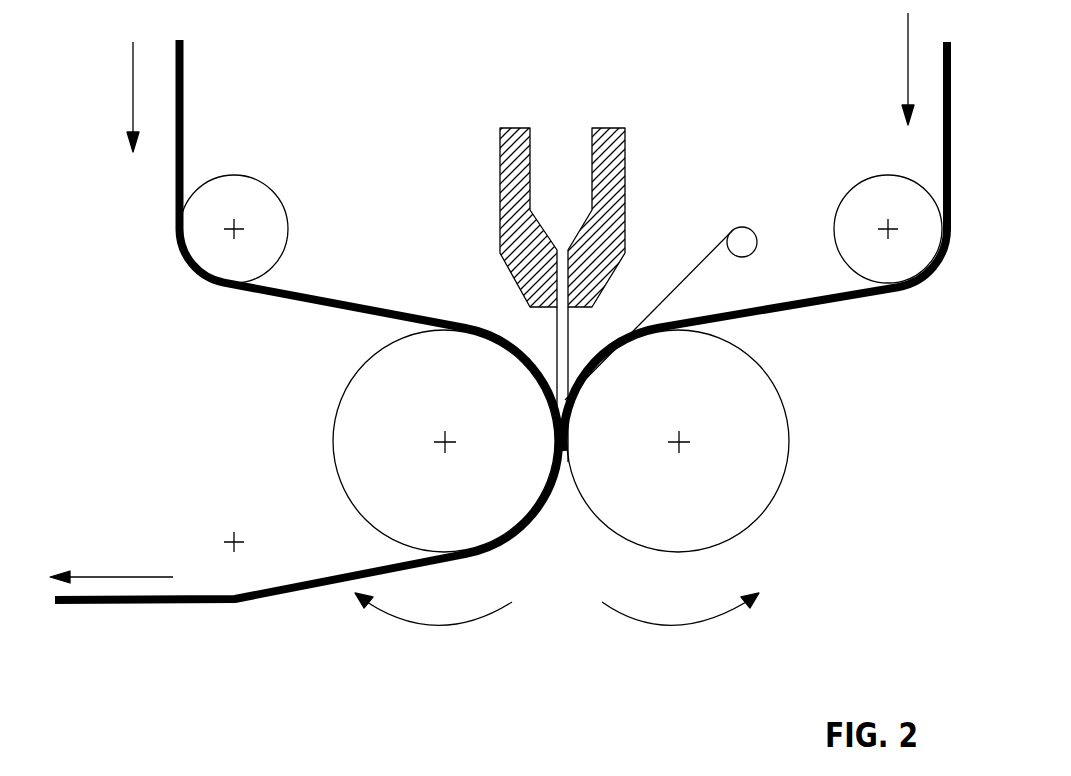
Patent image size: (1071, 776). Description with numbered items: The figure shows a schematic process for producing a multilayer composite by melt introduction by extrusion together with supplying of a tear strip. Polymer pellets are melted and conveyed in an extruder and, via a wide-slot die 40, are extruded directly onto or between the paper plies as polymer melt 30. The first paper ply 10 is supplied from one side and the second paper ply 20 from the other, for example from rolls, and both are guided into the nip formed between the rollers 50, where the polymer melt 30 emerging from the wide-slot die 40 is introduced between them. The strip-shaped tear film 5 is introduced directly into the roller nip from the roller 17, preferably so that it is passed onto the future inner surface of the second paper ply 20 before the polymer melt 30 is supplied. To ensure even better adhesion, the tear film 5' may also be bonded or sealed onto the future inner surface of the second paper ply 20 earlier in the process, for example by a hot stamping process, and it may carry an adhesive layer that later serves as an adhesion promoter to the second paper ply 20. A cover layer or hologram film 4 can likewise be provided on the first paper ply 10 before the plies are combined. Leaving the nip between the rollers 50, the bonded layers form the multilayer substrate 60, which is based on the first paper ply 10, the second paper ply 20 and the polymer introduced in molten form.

The cover layer or hologram film 4 is at (188, 82).
The first paper ply 10 is at (175, 173).
The tear film 5' is at (755, 232).
The second paper ply 20 is at (943, 168).
The wide-slot die 40 is at (627, 197).
The polymer melt 30 is at (572, 332).
The strip-shaped tear film 5 is at (649, 293).
The roller 17 is at (757, 242).
The nip rollers 50 is at (332, 452).
The multilayer substrate 60 is at (112, 602).